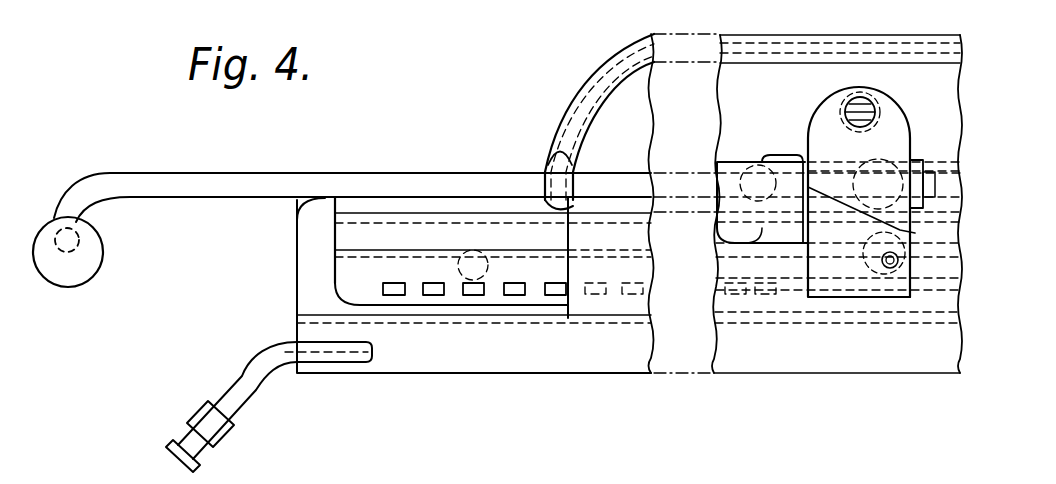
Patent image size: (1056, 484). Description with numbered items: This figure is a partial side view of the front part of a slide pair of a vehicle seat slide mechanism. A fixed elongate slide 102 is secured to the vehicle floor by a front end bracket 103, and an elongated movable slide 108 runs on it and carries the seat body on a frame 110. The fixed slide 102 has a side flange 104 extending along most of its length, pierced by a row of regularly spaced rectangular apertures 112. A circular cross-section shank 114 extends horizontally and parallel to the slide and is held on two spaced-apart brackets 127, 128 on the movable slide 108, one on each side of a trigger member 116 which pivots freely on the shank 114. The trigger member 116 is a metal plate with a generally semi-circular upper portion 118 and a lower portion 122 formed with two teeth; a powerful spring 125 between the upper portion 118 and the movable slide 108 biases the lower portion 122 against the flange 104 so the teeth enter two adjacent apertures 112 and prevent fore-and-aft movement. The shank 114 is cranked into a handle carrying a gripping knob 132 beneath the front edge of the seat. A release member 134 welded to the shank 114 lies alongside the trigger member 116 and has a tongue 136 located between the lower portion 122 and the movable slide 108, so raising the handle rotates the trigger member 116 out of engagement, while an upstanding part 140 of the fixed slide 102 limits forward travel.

The fixed elongate slide 102 is at (432, 362).
The front end bracket 103 is at (176, 446).
The side flange 104 is at (350, 277).
The movable slide 108 is at (565, 200).
The frame 110 is at (603, 87).
The rectangular apertures 112 is at (517, 296).
The shank 114 is at (600, 187).
The trigger member 116 is at (913, 142).
The upper portion 118 is at (822, 135).
The lower portion 122 is at (912, 297).
The spring 125 is at (882, 110).
The bracket 127 is at (925, 206).
The bracket 128 is at (915, 233).
The gripping knob 132 is at (86, 270).
The release member 134 is at (753, 232).
The tongue 136 is at (830, 262).
The upstanding part 140 is at (322, 210).